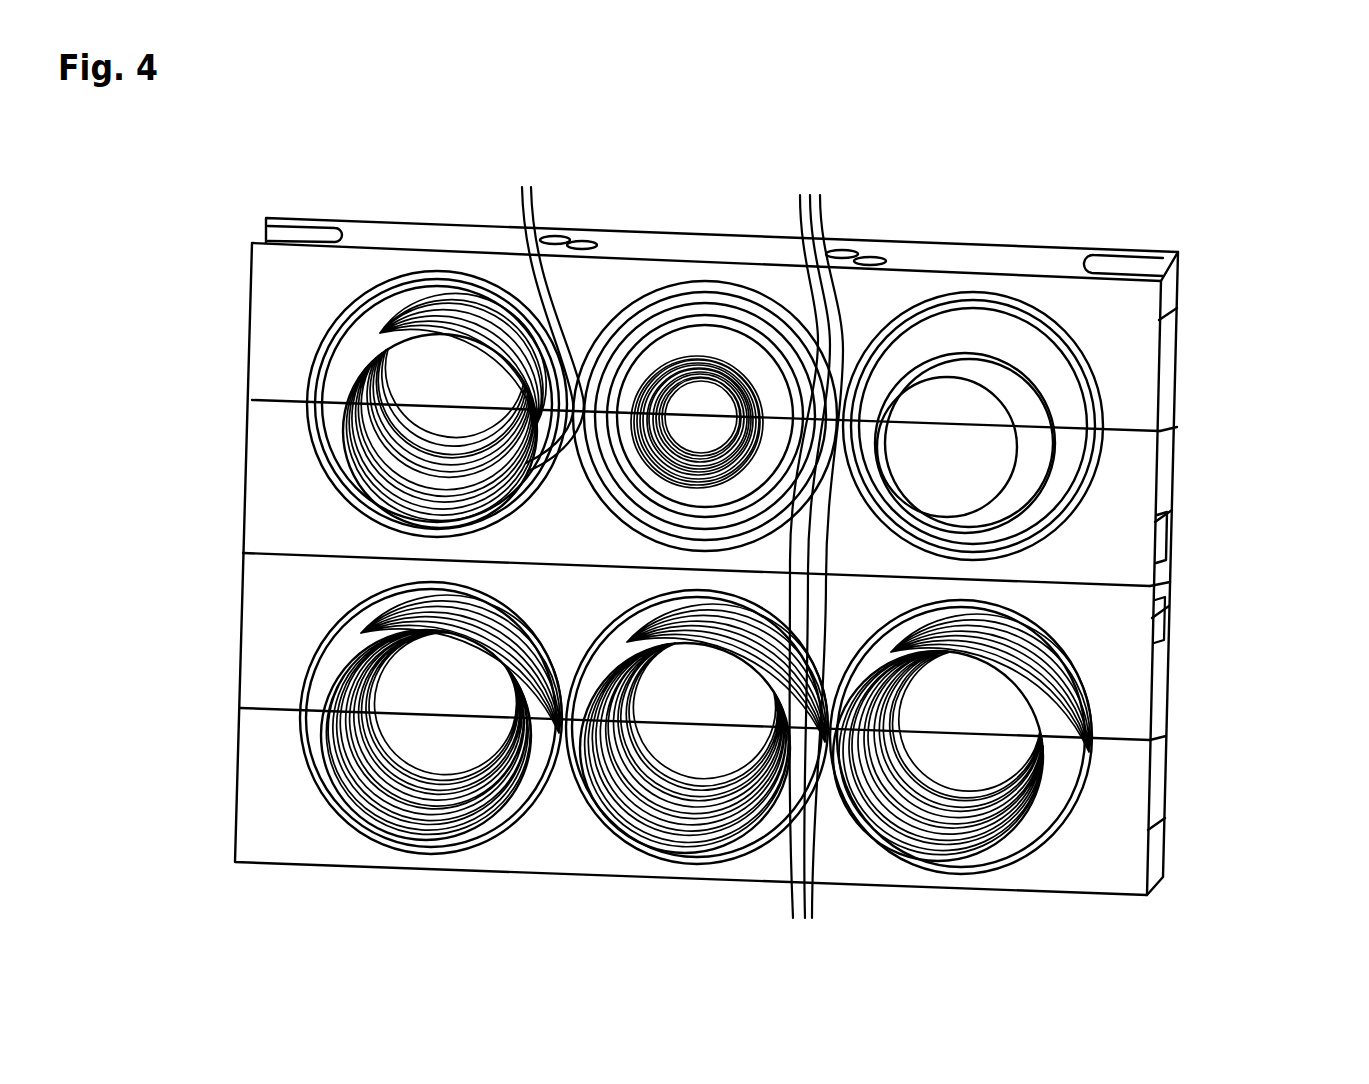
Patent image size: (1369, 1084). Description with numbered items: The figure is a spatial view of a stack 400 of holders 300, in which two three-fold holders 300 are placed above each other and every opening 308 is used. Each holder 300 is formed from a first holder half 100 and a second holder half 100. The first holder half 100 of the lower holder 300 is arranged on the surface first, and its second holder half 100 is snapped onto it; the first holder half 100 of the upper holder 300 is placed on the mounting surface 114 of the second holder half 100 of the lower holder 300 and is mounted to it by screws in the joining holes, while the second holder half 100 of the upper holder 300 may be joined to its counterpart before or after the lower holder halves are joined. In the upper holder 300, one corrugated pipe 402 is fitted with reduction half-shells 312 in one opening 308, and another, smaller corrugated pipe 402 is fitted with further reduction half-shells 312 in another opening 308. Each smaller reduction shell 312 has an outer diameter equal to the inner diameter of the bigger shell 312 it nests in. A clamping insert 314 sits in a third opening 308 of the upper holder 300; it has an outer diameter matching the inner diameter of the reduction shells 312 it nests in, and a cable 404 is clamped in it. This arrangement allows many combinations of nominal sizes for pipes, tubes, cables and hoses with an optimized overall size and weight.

The stack 400 is at (1213, 195).
The holder 300 is at (1228, 411).
The holder half 100 is at (1167, 344).
The mounting surface 114 is at (1097, 593).
The opening 308 is at (694, 412).
The reduction shell 312 is at (671, 556).
The clamping insert 314 is at (980, 336).
The corrugated pipe 402 is at (399, 330).
The cable 404 is at (1003, 387).